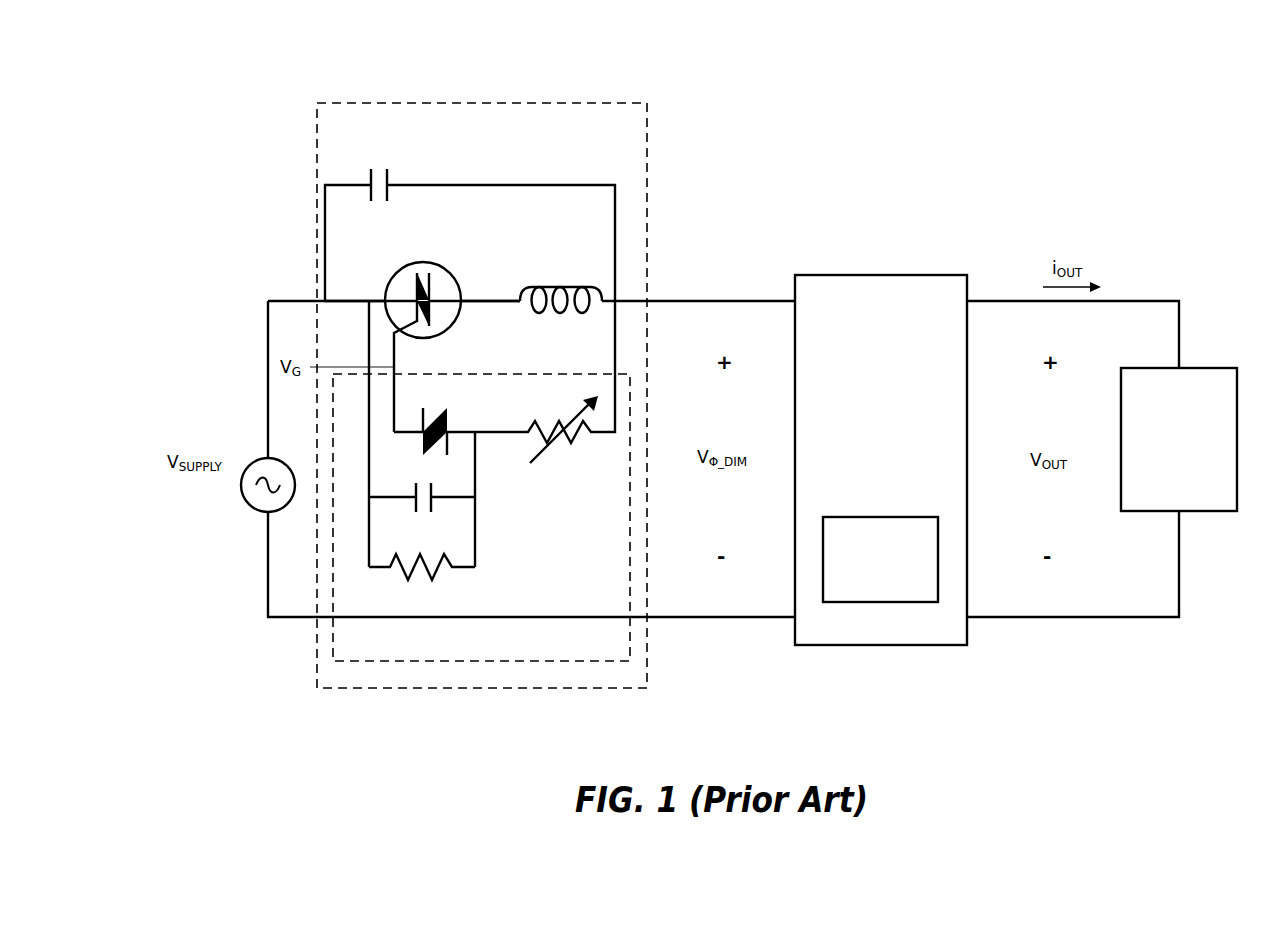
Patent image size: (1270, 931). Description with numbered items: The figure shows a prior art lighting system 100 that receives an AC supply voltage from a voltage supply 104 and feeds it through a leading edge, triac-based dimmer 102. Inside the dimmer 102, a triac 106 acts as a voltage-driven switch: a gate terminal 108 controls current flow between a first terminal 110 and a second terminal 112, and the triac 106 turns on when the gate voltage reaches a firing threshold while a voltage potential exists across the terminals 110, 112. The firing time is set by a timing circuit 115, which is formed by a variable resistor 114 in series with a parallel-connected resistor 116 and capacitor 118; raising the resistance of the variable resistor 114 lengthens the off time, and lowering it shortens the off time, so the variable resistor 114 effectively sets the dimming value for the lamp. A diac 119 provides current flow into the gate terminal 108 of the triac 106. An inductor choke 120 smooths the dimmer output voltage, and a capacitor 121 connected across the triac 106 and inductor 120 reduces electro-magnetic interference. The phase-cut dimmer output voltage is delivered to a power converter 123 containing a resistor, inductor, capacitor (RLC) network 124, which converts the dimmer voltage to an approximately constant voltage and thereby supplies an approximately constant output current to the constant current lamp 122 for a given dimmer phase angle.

The lighting system 100 is at (976, 193).
The triac-based dimmer 102 is at (548, 97).
The voltage supply 104 is at (243, 508).
The triac 106 is at (450, 273).
The gate terminal 108 is at (413, 328).
The first terminal 110 is at (385, 300).
The second terminal 112 is at (467, 304).
The variable resistor 114 is at (586, 440).
The timing circuit 115 is at (540, 659).
The resistor 116 is at (427, 580).
The capacitor 118 is at (435, 487).
The diac 119 is at (451, 420).
The inductor choke 120 is at (560, 318).
The capacitor 121 is at (386, 167).
The constant current lamp 122 is at (1179, 439).
The power converter 123 is at (881, 460).
The RLC network 124 is at (880, 559).